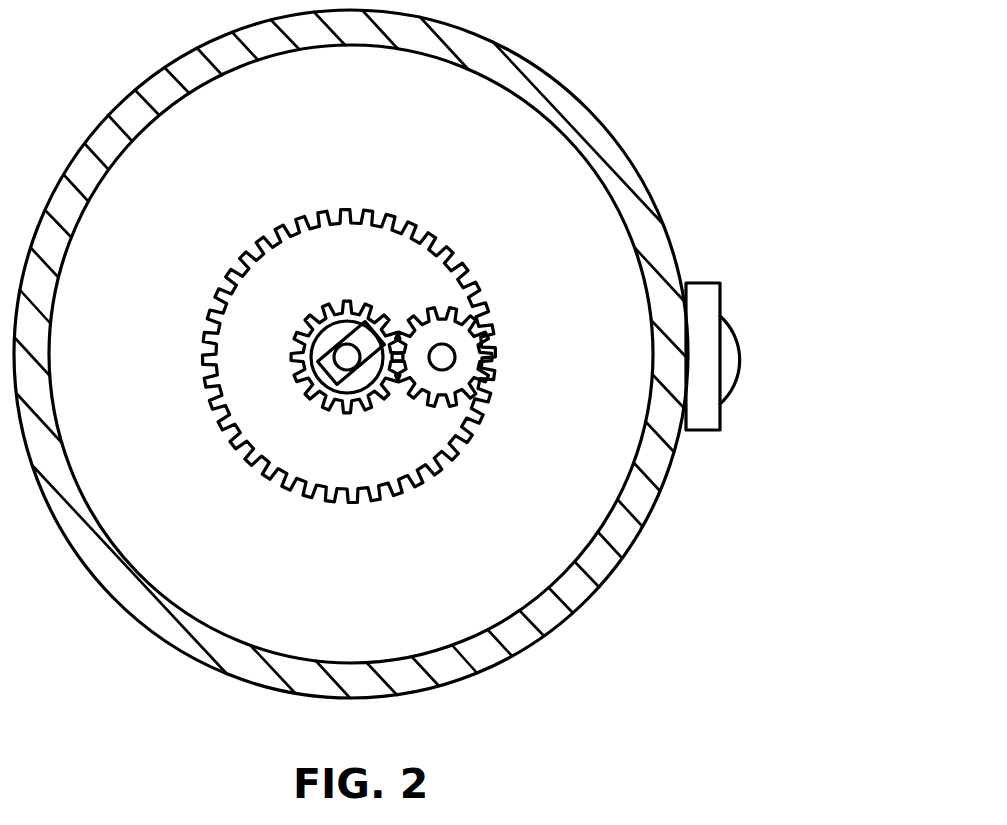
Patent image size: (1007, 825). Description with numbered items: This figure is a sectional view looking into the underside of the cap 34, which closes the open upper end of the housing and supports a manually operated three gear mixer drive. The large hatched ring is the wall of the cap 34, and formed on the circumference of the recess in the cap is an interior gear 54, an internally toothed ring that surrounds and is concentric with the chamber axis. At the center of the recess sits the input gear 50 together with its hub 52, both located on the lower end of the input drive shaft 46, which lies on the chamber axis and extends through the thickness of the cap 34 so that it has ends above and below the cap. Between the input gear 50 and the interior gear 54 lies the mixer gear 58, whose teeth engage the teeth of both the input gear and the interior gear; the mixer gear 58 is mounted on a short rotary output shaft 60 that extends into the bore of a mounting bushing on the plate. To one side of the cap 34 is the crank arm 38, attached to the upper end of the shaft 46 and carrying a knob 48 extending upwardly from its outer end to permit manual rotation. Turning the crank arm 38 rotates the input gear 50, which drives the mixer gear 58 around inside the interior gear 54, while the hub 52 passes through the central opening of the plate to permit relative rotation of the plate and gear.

The cap 34 is at (572, 88).
The crank arm 38 is at (697, 433).
The input drive shaft 46 is at (350, 338).
The knob 48 is at (732, 327).
The input gear 50 is at (329, 408).
The hub 52 is at (318, 359).
The interior gear 54 is at (235, 437).
The mixer gear 58 is at (428, 392).
The rotary output shaft 60 is at (446, 361).